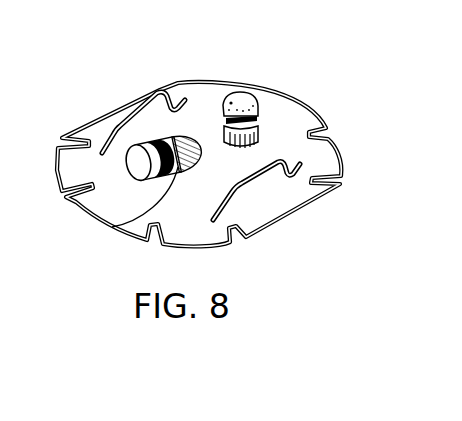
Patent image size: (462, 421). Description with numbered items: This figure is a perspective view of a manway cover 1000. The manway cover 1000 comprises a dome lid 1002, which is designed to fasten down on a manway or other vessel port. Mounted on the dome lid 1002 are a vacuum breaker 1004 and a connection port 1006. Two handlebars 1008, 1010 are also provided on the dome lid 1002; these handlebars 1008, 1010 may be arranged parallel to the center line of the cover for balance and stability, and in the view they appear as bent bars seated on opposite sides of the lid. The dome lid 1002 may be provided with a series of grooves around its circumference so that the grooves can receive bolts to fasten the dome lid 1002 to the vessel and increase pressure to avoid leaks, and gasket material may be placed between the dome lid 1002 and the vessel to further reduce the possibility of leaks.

The manway cover 1000 is at (206, 129).
The dome lid 1002 is at (288, 118).
The vacuum breaker 1004 is at (240, 97).
The connection port 1006 is at (112, 227).
The handlebar 1008 is at (137, 113).
The handlebar 1010 is at (250, 183).